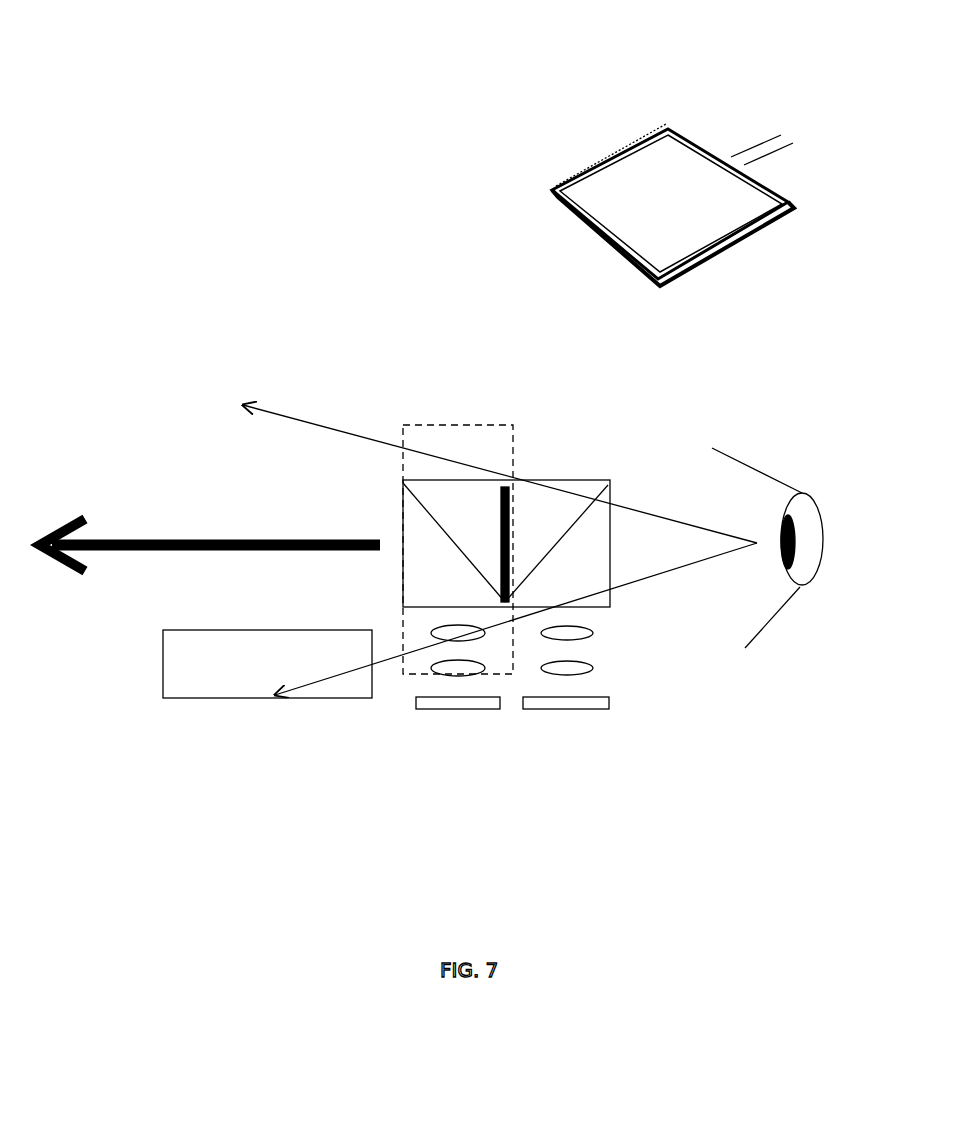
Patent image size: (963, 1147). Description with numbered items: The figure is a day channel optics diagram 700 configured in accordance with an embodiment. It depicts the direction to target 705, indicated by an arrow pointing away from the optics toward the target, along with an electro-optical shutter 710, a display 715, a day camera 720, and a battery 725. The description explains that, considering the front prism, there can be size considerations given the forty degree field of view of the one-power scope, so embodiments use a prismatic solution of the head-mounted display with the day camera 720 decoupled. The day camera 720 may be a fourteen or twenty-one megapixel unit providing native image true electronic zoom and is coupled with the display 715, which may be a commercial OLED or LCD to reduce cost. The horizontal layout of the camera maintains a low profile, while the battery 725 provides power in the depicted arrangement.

The day channel optics diagram 700 is at (50, 38).
The direction to target 705 is at (210, 516).
The electro-optical shutter 710 is at (518, 494).
The display 715 is at (612, 722).
The day camera 720 is at (415, 722).
The battery 725 is at (267, 664).